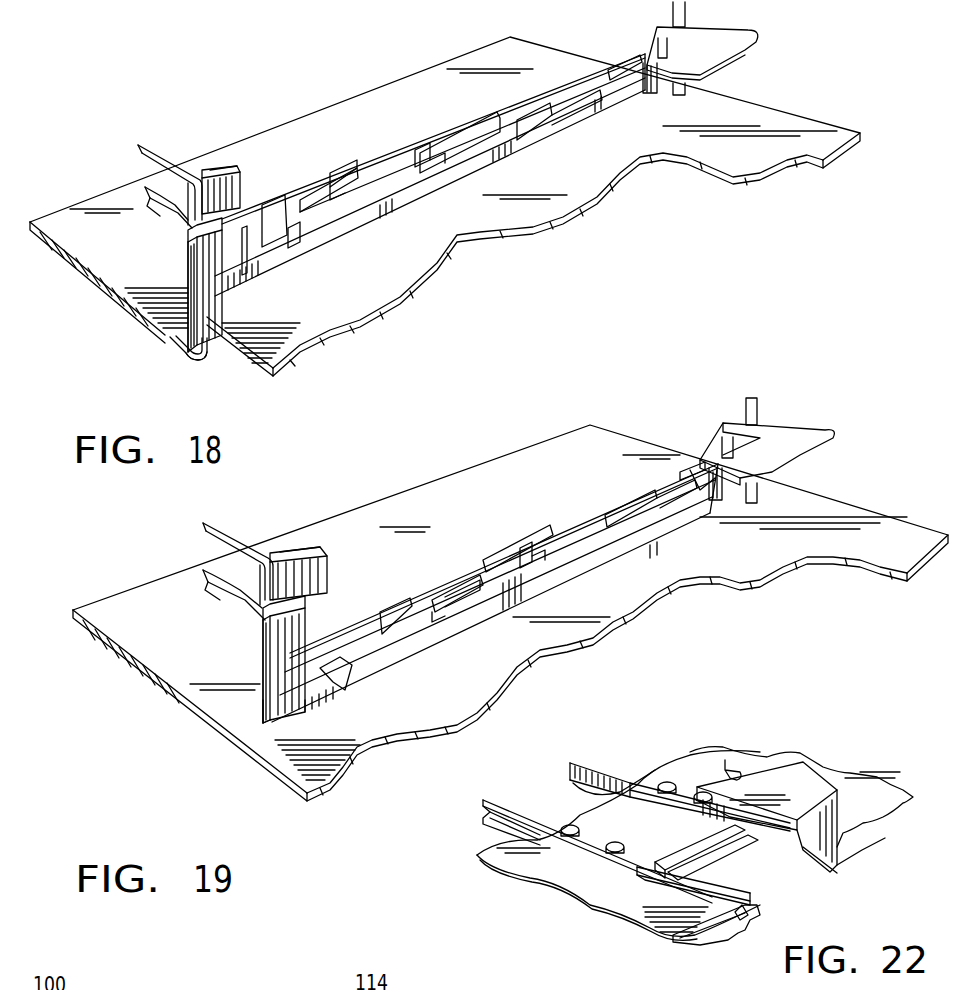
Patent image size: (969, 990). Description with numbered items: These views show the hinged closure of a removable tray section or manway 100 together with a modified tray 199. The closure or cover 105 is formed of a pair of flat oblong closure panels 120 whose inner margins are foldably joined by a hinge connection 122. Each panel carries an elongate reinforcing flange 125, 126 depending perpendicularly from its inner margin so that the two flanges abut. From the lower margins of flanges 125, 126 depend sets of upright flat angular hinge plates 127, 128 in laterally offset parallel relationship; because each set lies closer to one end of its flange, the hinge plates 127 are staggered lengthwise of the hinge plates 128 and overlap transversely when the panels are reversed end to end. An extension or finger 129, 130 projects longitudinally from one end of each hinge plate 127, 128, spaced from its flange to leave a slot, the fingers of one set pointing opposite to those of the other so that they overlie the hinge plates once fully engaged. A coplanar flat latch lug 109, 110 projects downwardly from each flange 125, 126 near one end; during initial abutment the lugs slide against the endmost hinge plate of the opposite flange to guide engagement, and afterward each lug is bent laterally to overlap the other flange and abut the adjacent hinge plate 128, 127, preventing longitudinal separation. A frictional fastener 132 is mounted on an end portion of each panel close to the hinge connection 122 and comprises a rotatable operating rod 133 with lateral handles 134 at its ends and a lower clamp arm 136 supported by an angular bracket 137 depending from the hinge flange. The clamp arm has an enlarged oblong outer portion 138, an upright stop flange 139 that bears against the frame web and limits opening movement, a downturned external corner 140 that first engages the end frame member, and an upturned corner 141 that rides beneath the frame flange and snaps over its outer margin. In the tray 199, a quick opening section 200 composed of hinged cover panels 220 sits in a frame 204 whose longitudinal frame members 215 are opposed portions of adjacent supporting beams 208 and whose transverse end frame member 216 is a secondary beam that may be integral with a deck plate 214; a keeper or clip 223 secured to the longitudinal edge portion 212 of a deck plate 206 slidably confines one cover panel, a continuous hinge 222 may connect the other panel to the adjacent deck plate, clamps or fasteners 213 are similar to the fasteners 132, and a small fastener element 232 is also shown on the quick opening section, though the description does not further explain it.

In FIG. 18, the removable tray section or manway 100 is at (498, 35).
In FIG. 19, the removable tray section or manway 100 is at (573, 430).
In FIG. 18, the closure or cover 105 is at (913, 113).
In FIG. 19, the closure or cover 105 is at (688, 649).
In FIG. 18, the latch plate or lug 109 is at (297, 240).
In FIG. 19, the latch plate or lug 109 is at (340, 660).
In FIG. 18, the latch plate or lug 110 is at (615, 55).
In FIG. 19, the latch plate or lug 110 is at (708, 462).
In FIG. 18, the closure member or panel 120 is at (305, 120).
In FIG. 19, the closure member or panel 120 is at (824, 608).
In FIG. 18, the hinge connection 122 is at (555, 133).
In FIG. 19, the hinge connection 122 is at (618, 550).
In FIG. 18, the reinforcing flange 125 is at (378, 222).
In FIG. 19, the reinforcing flange 125 is at (545, 585).
In FIG. 18, the reinforcing flange 126 is at (392, 192).
In FIG. 19, the reinforcing flange 126 is at (475, 590).
In FIG. 18, the angular hinge plate 127 is at (335, 190).
In FIG. 19, the angular hinge plate 127 is at (440, 590).
In FIG. 18, the angular hinge plate 128 is at (275, 222).
In FIG. 19, the angular hinge plate 128 is at (388, 638).
In FIG. 18, the extension or finger 129 is at (332, 198).
In FIG. 19, the extension or finger 129 is at (430, 600).
In FIG. 18, the extension or finger 130 is at (455, 140).
In FIG. 19, the extension or finger 130 is at (530, 545).
In FIG. 18, the frictional fastener 132 is at (185, 235).
In FIG. 19, the frictional fastener 132 is at (262, 545).
In FIG. 18, the operating rod 133 is at (203, 360).
In FIG. 19, the operating rod 133 is at (263, 625).
In FIG. 18, the lateral arm or handle 134 is at (160, 140).
In FIG. 19, the lateral arm or handle 134 is at (203, 526).
In FIG. 18, the lower clamp arm or member 136 is at (152, 208).
In FIG. 19, the lower clamp arm or member 136 is at (242, 598).
In FIG. 18, the angular bracket 137 is at (185, 290).
In FIG. 19, the angular bracket 137 is at (263, 672).
In FIG. 18, the outer transversely oblong portion 138 is at (232, 168).
In FIG. 19, the outer transversely oblong portion 138 is at (312, 560).
In FIG. 18, the stop element or flange 139 is at (240, 195).
In FIG. 19, the stop element or flange 139 is at (322, 580).
In FIG. 18, the external corner 140 is at (145, 190).
In FIG. 19, the external corner 140 is at (205, 578).
In FIG. 18, the corner 141 is at (222, 170).
In FIG. 19, the corner 141 is at (295, 548).
In FIG. 22, the tray 199 is at (882, 768).
In FIG. 22, the quick opening section 200 is at (740, 760).
In FIG. 22, the frame 204 is at (813, 929).
In FIG. 22, the deck plate 206 is at (490, 855).
In FIG. 22, the supporting beam 208 is at (573, 760).
In FIG. 22, the longitudinal edge portion 212 is at (588, 840).
In FIG. 22, the clamp or fastener 213 is at (625, 842).
In FIG. 22, the deck plate 214 is at (578, 808).
In FIG. 22, the longitudinal frame member or portion 215 is at (785, 853).
In FIG. 22, the end or transverse frame member or portion 216 is at (705, 848).
In FIG. 22, the closure member or cover panel 220 is at (800, 780).
In FIG. 22, the continuous hinge 222 is at (807, 853).
In FIG. 22, the keeper or clip 223 is at (665, 875).
In FIG. 22, the clip 232 is at (730, 758).